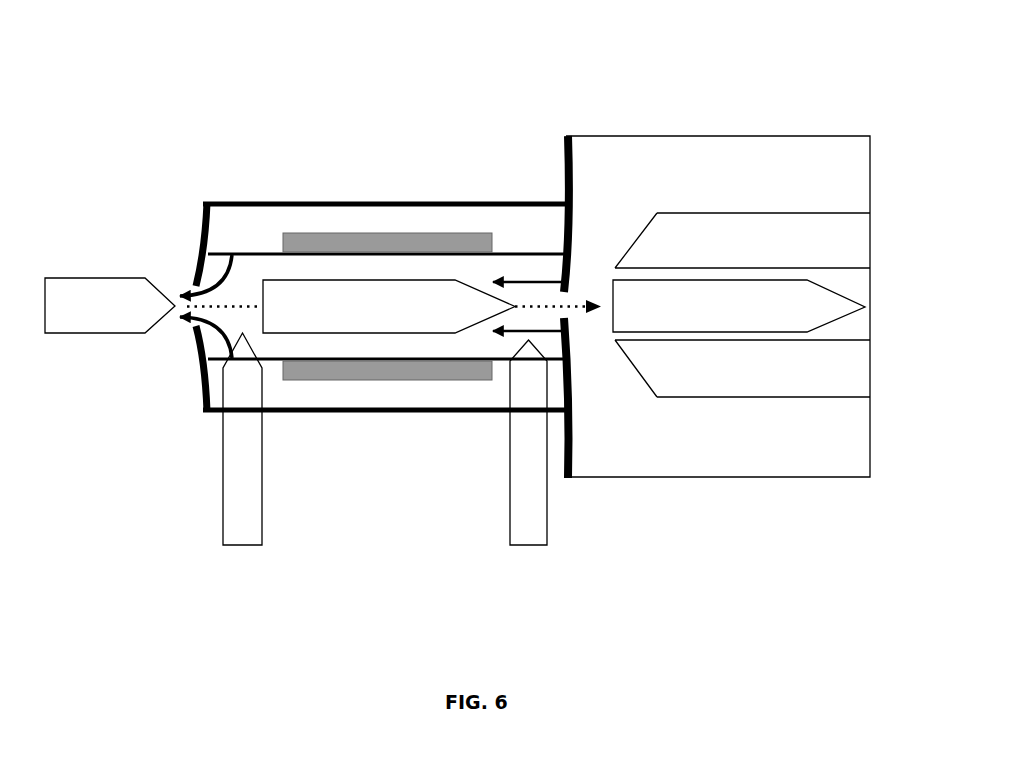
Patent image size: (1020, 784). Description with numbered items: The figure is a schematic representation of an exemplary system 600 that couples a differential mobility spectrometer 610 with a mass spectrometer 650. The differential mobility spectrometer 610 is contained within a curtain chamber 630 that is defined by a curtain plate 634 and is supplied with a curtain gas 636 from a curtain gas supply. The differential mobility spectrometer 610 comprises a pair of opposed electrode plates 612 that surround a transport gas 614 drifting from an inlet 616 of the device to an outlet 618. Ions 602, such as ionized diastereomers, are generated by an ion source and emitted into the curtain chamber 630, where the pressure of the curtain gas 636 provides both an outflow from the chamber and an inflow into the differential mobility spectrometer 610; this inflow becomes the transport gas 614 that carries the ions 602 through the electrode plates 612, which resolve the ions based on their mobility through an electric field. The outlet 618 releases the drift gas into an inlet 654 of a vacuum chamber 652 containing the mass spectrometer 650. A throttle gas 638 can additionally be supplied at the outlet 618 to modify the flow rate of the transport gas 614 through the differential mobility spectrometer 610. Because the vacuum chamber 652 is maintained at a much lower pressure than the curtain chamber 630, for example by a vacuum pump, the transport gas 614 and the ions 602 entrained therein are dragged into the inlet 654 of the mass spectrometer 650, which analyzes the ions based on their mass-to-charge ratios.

The system 600 is at (221, 110).
The ions 602 is at (90, 334).
The differential mobility spectrometer 610 is at (382, 430).
The electrode plates 612 is at (365, 233).
The transport gas 614 is at (432, 280).
The inlet 616 is at (251, 278).
The outlet 618 is at (519, 274).
The curtain chamber 630 is at (307, 405).
The curtain plate 634 is at (197, 267).
The curtain gas 636 is at (243, 547).
The throttle gas 638 is at (528, 548).
The mass spectrometer 650 is at (837, 235).
The vacuum chamber 652 is at (865, 165).
The inlet of vacuum chamber 654 is at (570, 290).